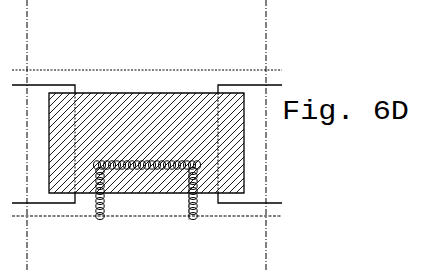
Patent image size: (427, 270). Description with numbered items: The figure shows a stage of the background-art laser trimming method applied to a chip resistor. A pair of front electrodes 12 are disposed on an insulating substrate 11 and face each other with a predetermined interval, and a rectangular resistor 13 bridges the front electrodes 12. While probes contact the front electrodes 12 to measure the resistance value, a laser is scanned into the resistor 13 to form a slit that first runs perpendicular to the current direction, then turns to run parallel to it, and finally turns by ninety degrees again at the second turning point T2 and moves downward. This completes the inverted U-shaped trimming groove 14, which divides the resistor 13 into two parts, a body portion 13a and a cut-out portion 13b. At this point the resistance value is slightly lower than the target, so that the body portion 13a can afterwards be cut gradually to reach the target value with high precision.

The insulating substrate 11 is at (100, 70).
The front electrodes 12 is at (43, 93).
The resistor 13 is at (180, 93).
The body portion 13a is at (141, 110).
The cut-out portion 13b is at (134, 193).
The trimming groove 14 is at (175, 160).
The second turning point T2 is at (186, 173).